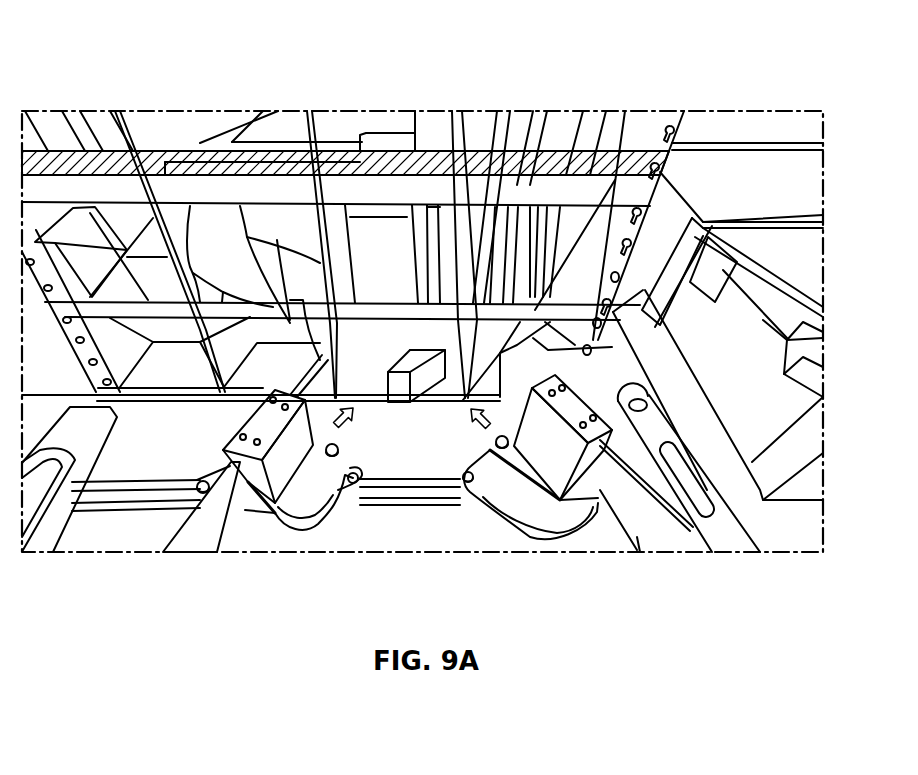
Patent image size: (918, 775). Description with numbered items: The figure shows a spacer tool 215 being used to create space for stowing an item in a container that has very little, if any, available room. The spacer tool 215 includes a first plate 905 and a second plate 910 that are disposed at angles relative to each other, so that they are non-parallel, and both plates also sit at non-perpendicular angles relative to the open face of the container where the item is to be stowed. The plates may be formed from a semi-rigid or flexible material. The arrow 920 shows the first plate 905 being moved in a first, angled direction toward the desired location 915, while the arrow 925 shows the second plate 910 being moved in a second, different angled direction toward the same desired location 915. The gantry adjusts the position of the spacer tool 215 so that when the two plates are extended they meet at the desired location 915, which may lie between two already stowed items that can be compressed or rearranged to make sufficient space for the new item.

The first plate 905 is at (243, 220).
The second plate 910 is at (622, 185).
The desired location 915 is at (430, 196).
The arrow 920 is at (347, 428).
The arrow 925 is at (478, 424).
The spacer tool 215 is at (538, 578).